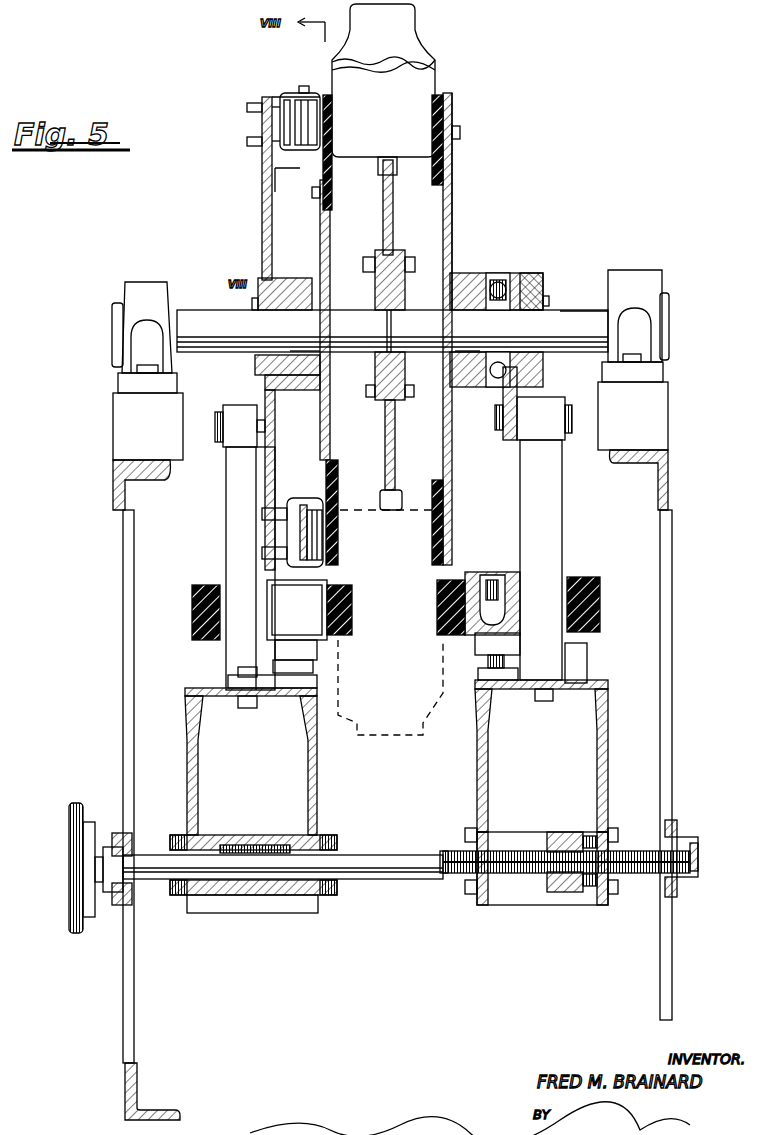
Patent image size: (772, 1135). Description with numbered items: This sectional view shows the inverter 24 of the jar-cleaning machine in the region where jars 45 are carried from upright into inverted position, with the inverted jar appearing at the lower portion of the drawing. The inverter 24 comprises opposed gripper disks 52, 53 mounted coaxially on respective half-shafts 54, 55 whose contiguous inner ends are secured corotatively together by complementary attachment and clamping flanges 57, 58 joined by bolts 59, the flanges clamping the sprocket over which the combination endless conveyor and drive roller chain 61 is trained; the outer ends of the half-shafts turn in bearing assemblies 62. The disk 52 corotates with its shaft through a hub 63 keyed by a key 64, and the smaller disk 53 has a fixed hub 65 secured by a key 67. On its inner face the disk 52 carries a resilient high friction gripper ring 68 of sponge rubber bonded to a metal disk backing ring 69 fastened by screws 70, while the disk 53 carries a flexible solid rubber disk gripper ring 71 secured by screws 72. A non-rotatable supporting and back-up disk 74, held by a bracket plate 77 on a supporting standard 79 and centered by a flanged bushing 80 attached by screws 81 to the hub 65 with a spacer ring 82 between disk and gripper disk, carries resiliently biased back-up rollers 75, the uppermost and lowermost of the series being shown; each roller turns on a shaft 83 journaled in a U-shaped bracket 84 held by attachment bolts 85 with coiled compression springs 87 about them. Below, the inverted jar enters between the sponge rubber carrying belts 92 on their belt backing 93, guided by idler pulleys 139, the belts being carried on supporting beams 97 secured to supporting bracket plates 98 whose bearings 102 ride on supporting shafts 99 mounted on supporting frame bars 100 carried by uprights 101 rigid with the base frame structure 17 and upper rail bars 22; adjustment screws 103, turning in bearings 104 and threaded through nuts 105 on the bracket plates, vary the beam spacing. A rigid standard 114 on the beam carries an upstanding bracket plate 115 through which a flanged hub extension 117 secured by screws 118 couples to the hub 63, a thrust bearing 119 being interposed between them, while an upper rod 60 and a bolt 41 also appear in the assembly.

The base frame structure 17 is at (127, 1083).
The upper rail bars 22 is at (152, 470).
The inverter 24 is at (466, 193).
The bolt 41 is at (272, 433).
The jars 45 is at (420, 42).
The gripper disk 52 is at (452, 222).
The gripper disk 53 is at (328, 265).
The half-shaft 54 is at (578, 312).
The half-shaft 55 is at (196, 312).
The attachment and clamping flange 57 is at (405, 387).
The attachment and clamping flange 58 is at (378, 382).
The bolts 59 is at (394, 420).
The upper rod 60 is at (392, 235).
The combination endless conveyor and drive roller chain 61 is at (387, 172).
The bearing assemblies 62 is at (143, 287).
The hub 63 is at (462, 273).
The key 64 is at (470, 351).
The hub 65 is at (315, 305).
The key 67 is at (300, 351).
The resilient high friction gripper ring 68 is at (445, 165).
The metal disk backing ring 69 is at (452, 100).
The screws 70 is at (461, 133).
The flexible solid rubber disk gripper ring 71 is at (338, 545).
The screws 72 is at (302, 200).
The supporting and back-up disk 74 is at (265, 488).
The resiliently biased back-up rollers 75 is at (291, 98).
The bracket plate 77 is at (250, 405).
The supporting standard 79 is at (234, 532).
The flanged bushing 80 is at (257, 362).
The screws 81 is at (258, 297).
The spacer ring 82 is at (305, 392).
The shaft 83 is at (305, 86).
The U-shaped bracket 84 is at (281, 97).
The attachment bolts 85 is at (256, 107).
The coiled compression springs 87 is at (264, 170).
The carrying belts 92 is at (193, 625).
The belt backing 93 is at (212, 586).
The supporting beams 97 is at (285, 698).
The supporting bracket plates 98 is at (188, 778).
The supporting shafts 99 is at (355, 853).
The supporting frame bars 100 is at (132, 840).
The uprights 101 is at (124, 672).
The bearings 102 is at (253, 838).
The adjustment screws 103 is at (443, 875).
The bearings 104 is at (670, 884).
The nuts 105 is at (563, 892).
The rigid standard 114 is at (562, 537).
The upstanding bracket plate 115 is at (505, 420).
The flanged hub extension 117 is at (528, 273).
The screws 118 is at (546, 296).
The thrust bearing 119 is at (498, 273).
The idler pulleys 139 is at (277, 605).